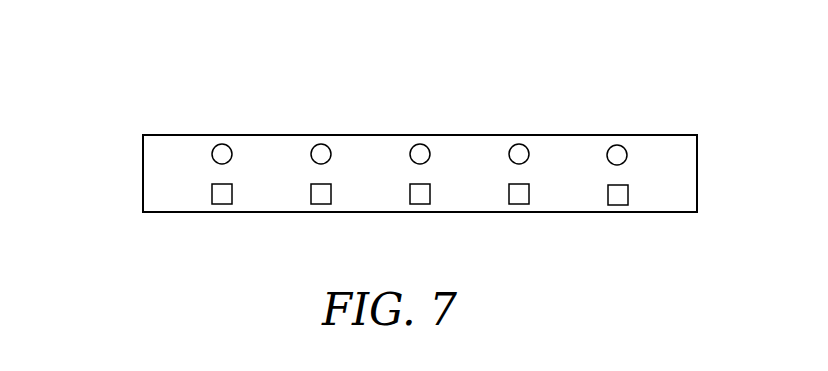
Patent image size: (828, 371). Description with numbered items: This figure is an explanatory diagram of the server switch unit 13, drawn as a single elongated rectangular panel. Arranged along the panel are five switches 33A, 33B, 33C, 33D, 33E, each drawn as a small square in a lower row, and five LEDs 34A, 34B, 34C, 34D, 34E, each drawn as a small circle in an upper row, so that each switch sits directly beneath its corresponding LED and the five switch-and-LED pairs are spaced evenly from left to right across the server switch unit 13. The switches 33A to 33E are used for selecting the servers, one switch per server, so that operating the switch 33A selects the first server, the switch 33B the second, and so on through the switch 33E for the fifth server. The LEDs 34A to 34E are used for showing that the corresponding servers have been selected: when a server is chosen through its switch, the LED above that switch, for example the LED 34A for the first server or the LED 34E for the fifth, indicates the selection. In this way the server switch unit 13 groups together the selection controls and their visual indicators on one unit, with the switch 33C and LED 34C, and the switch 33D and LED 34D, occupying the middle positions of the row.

The server switch unit 13 is at (143, 174).
The switch 33A is at (232, 188).
The switch 33B is at (331, 188).
The switch 33C is at (431, 189).
The switch 33D is at (529, 189).
The switch 33E is at (628, 190).
The LED 34A is at (220, 144).
The LED 34B is at (319, 144).
The LED 34C is at (418, 144).
The LED 34D is at (517, 144).
The LED 34E is at (615, 145).